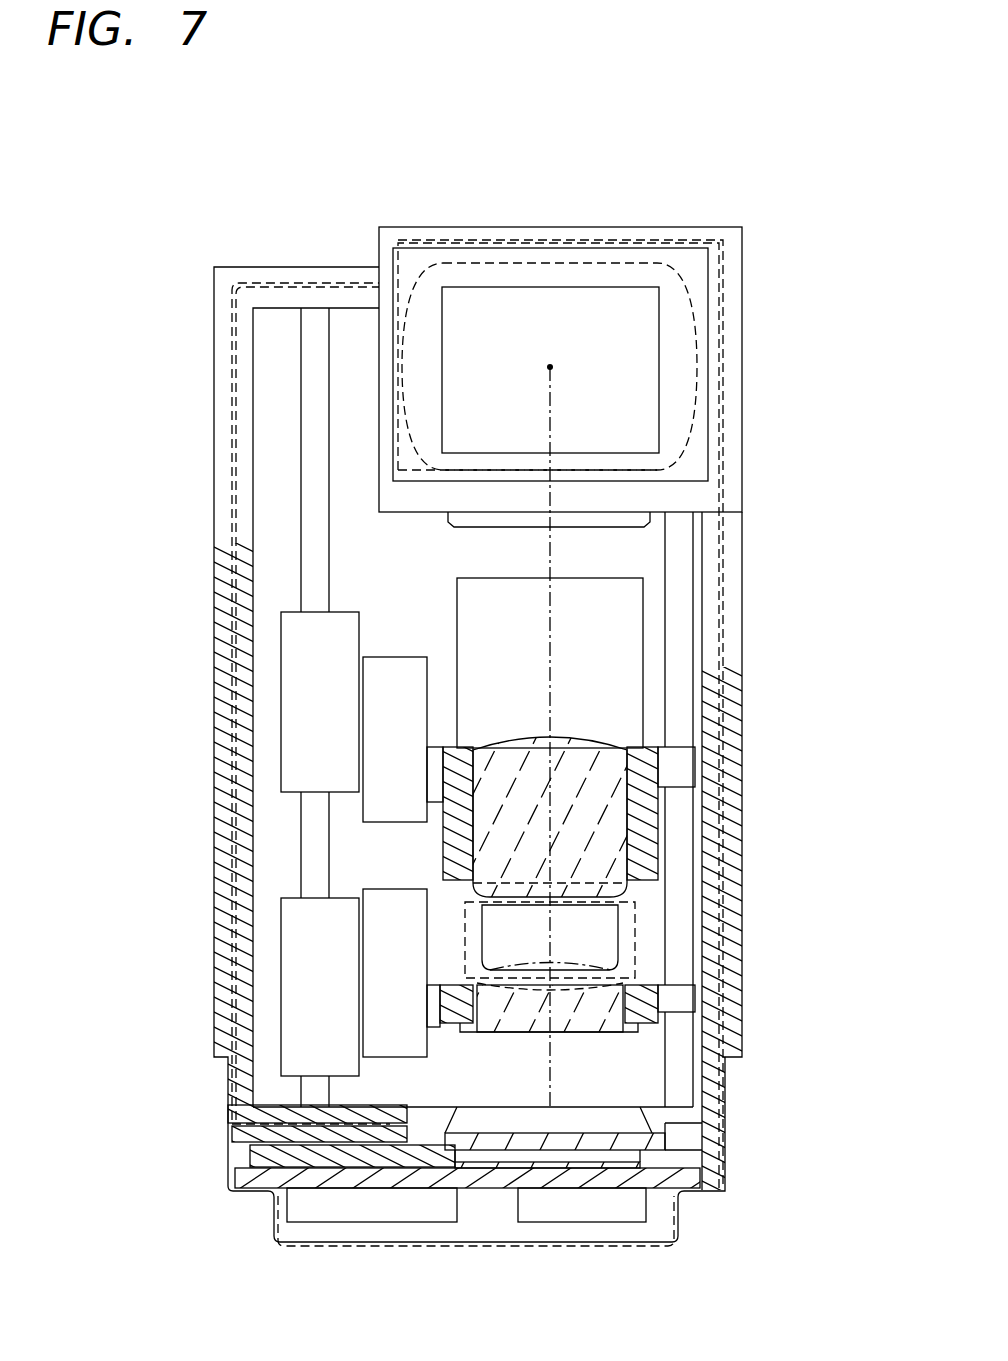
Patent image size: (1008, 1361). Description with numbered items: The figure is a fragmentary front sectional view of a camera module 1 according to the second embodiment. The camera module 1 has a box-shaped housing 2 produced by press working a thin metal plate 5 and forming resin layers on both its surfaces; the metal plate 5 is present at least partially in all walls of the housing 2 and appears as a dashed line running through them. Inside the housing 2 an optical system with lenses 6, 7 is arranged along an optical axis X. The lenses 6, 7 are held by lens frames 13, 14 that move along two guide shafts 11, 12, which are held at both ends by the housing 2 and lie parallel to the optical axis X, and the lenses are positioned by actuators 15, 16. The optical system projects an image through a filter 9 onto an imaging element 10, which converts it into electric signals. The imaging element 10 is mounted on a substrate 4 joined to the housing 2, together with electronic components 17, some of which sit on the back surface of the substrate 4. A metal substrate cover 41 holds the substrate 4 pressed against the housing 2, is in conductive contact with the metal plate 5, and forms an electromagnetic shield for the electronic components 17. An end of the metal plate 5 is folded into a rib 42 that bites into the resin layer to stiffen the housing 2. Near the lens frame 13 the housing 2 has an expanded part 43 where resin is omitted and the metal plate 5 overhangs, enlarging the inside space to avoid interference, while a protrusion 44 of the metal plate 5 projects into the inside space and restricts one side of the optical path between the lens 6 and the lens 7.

The camera module 1 is at (451, 196).
The housing 2 is at (248, 256).
The substrate 4 is at (485, 1203).
The metal plate 5 is at (310, 283).
The lens 6 is at (600, 747).
The lens 7 is at (602, 972).
The filter 9 is at (622, 1150).
The imaging element 10 is at (533, 1168).
The guide shaft 11 is at (307, 463).
The guide shaft 12 is at (690, 537).
The lens frame 13 is at (660, 837).
The lens frame 14 is at (660, 1018).
The actuator 15 is at (380, 712).
The actuator 16 is at (377, 962).
The electronic component 17 is at (383, 1222).
The substrate cover 41 is at (730, 1180).
The rib 42 is at (722, 1122).
The expanded part 43 is at (615, 600).
The protrusion 44 is at (590, 903).
The optical axis X is at (550, 410).